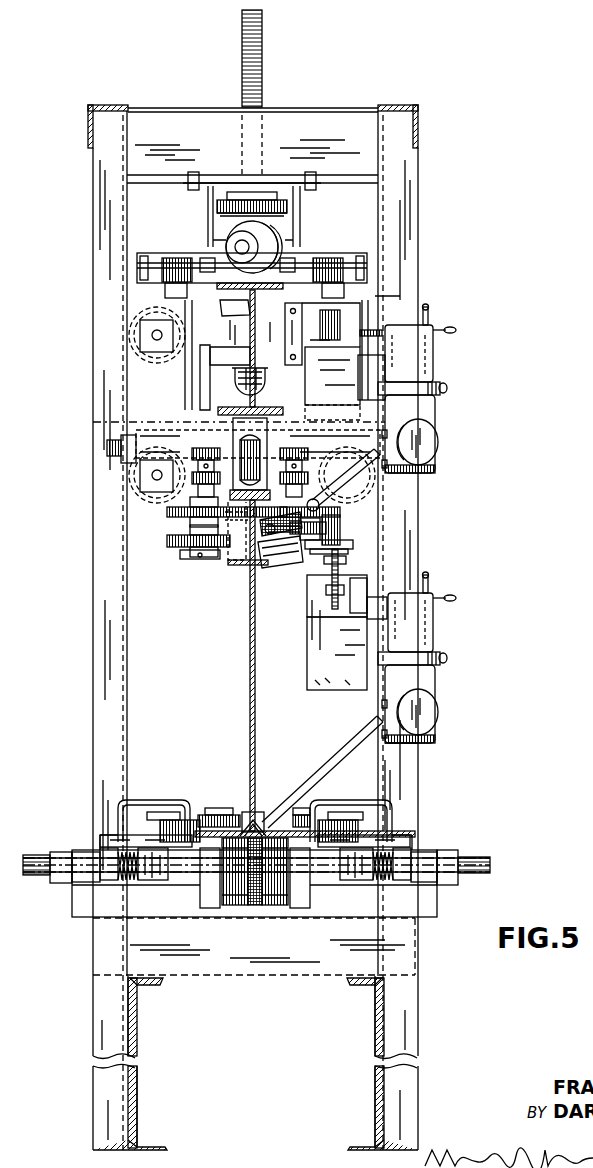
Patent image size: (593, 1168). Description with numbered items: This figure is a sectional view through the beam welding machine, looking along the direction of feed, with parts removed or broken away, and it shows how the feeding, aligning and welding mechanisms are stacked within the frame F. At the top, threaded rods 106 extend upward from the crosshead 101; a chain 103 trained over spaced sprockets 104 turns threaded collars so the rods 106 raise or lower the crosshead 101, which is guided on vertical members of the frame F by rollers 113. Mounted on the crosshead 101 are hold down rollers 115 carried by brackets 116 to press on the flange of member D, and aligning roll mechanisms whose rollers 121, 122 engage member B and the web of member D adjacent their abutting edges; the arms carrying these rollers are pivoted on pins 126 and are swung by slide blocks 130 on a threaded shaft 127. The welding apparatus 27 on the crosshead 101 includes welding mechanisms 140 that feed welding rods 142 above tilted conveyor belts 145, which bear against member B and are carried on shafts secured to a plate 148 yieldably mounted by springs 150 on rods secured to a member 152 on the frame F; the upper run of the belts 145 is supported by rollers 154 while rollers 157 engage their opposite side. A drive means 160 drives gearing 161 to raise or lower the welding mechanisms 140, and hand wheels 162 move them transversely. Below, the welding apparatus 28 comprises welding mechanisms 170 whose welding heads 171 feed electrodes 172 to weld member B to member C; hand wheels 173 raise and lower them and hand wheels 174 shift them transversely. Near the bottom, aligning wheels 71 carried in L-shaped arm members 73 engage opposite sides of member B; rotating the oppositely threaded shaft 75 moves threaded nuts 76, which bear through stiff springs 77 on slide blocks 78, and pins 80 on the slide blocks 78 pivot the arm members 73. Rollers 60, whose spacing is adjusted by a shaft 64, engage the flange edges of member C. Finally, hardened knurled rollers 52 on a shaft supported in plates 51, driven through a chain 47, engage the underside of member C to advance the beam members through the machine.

The frame F is at (424, 192).
The threaded rods 106 is at (262, 62).
The chain 103 is at (290, 208).
The sprockets 104 is at (218, 212).
The drive means 160 is at (288, 240).
The gearing 161 is at (307, 257).
The rollers 113 is at (130, 335).
The crosshead 101 is at (213, 324).
The hand wheels 162 is at (432, 316).
The brackets 116 is at (240, 392).
The hold down rollers 115 is at (246, 460).
The slide blocks 130 is at (125, 421).
The shaft 127 is at (107, 447).
The welding mechanisms 140 is at (438, 384).
The welding apparatus 27 is at (449, 402).
The pins 126 is at (172, 512).
The roller 122 is at (172, 536).
The roller 121 is at (180, 558).
The member 152 is at (340, 523).
The springs 150 is at (348, 540).
The plate 148 is at (340, 557).
The hand wheels 173 is at (368, 583).
The welding rods 142 is at (240, 566).
The conveyor belts 145 is at (262, 582).
The rollers 157 is at (300, 565).
The rollers 154 is at (270, 575).
The hand wheels 174 is at (432, 580).
The welding mechanisms 170 is at (435, 606).
The welding heads 171 is at (436, 634).
The welding apparatus 28 is at (449, 719).
The arm members 73 is at (160, 792).
The rollers 60 is at (170, 815).
The aligning wheels 71 is at (218, 814).
The electrodes 172 is at (255, 815).
The pins 80 is at (110, 842).
The shaft 64 is at (490, 866).
The shaft 75 is at (455, 880).
The threaded nuts 76 is at (97, 900).
The springs 77 is at (132, 882).
The slide blocks 78 is at (165, 882).
The plates 51 is at (205, 908).
The hardened knurled rollers 52 is at (236, 906).
The chain 47 is at (256, 906).